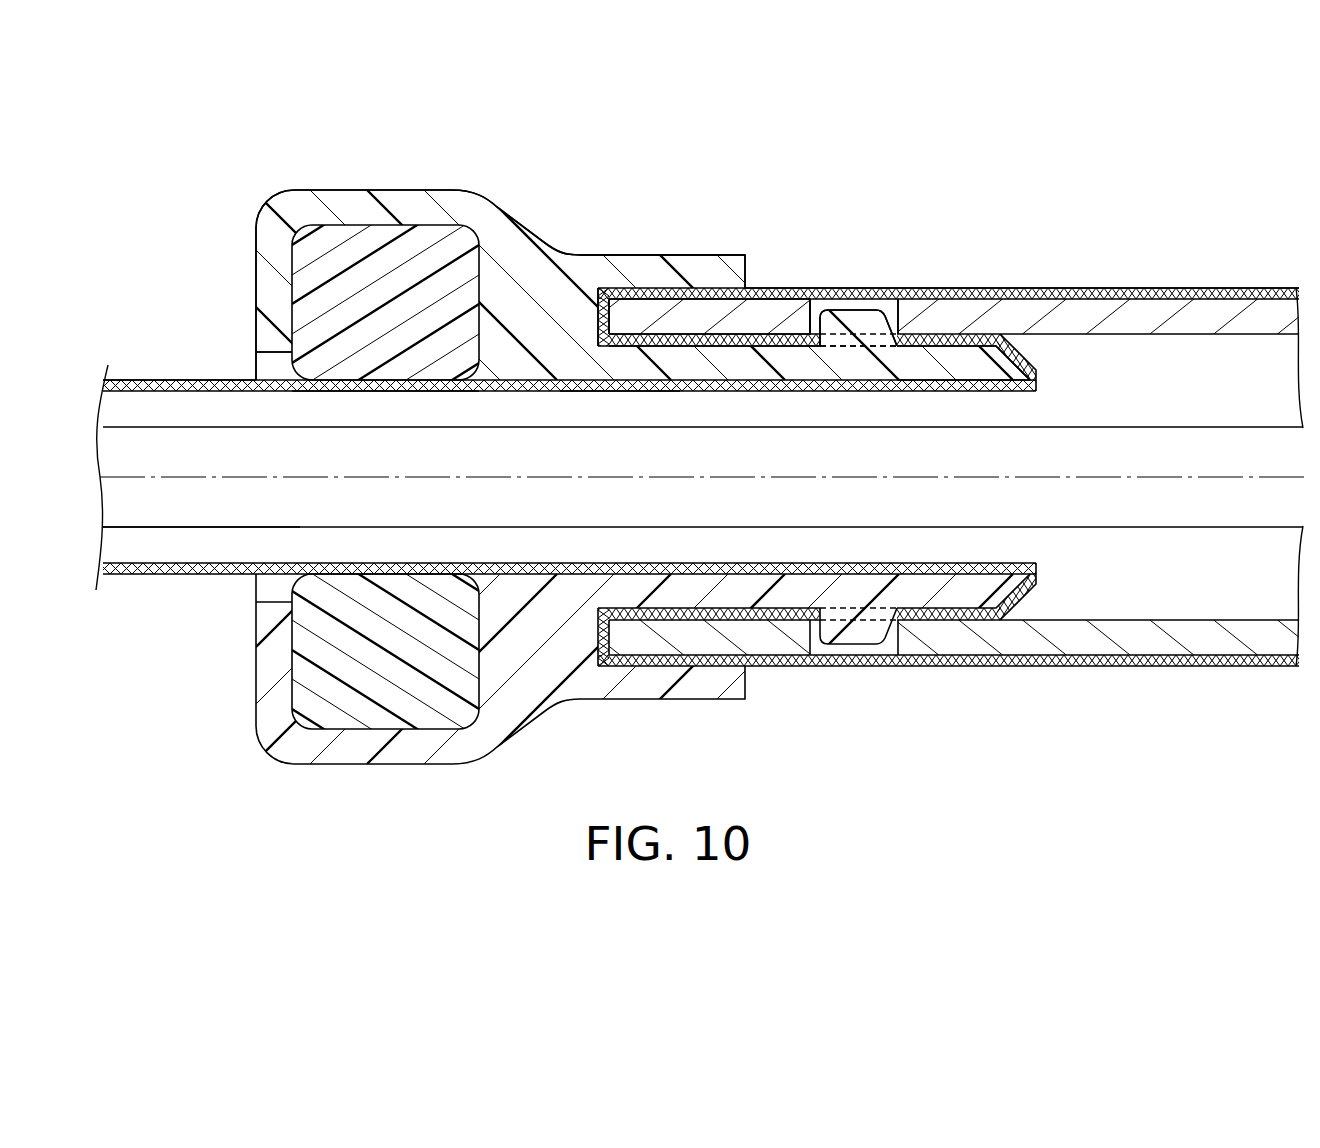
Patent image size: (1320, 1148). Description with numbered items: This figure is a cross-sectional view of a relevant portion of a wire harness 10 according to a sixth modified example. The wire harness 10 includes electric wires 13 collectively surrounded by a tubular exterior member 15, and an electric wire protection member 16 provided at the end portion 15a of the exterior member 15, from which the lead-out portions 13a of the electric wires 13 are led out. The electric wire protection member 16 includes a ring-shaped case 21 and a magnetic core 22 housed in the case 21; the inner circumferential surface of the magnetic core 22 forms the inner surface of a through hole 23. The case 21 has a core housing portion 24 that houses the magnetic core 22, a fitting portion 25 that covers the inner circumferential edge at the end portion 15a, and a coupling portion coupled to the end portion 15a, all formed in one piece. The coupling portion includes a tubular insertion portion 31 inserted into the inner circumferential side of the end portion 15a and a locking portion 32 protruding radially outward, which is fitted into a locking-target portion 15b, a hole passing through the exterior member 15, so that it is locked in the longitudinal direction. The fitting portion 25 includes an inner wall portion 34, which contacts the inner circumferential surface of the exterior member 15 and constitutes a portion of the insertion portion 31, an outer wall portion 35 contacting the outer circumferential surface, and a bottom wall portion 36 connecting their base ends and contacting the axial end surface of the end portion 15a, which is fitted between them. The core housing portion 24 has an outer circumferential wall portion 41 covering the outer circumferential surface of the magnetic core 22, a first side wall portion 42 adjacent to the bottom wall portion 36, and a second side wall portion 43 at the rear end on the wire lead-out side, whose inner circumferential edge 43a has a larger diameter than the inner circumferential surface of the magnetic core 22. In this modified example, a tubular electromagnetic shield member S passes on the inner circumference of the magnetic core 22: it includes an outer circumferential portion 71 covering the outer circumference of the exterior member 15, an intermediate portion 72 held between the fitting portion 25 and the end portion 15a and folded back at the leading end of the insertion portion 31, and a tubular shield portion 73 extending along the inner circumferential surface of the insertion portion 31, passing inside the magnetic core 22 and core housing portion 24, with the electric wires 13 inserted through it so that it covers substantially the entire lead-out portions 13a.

The wire harness 10 is at (703, 574).
The electric wire 13 is at (1143, 428).
The lead-out portion 13a is at (163, 530).
The exterior member 15 is at (1095, 315).
The end portion 15a is at (708, 310).
The locking-target portion 15b is at (898, 317).
The electric wire protection member 16 is at (278, 202).
The case 21 is at (257, 664).
The magnetic core 22 is at (382, 237).
The through hole 23 is at (365, 392).
The core housing portion 24 is at (323, 190).
The fitting portion 25 is at (617, 390).
The insertion portion 31 is at (960, 363).
The locking portion 32 is at (860, 320).
The inner wall portion 34 is at (692, 363).
The outer wall portion 35 is at (675, 262).
The bottom wall portion 36 is at (587, 313).
The outer circumferential wall portion 41 is at (417, 210).
The first side wall portion 42 is at (490, 293).
The second side wall portion 43 is at (258, 274).
The inner circumferential edge 43a is at (258, 360).
The outer circumferential portion 71 is at (783, 285).
The intermediate portion 72 is at (635, 287).
The shield portion 73 is at (817, 388).
The electromagnetic shield member S is at (148, 378).